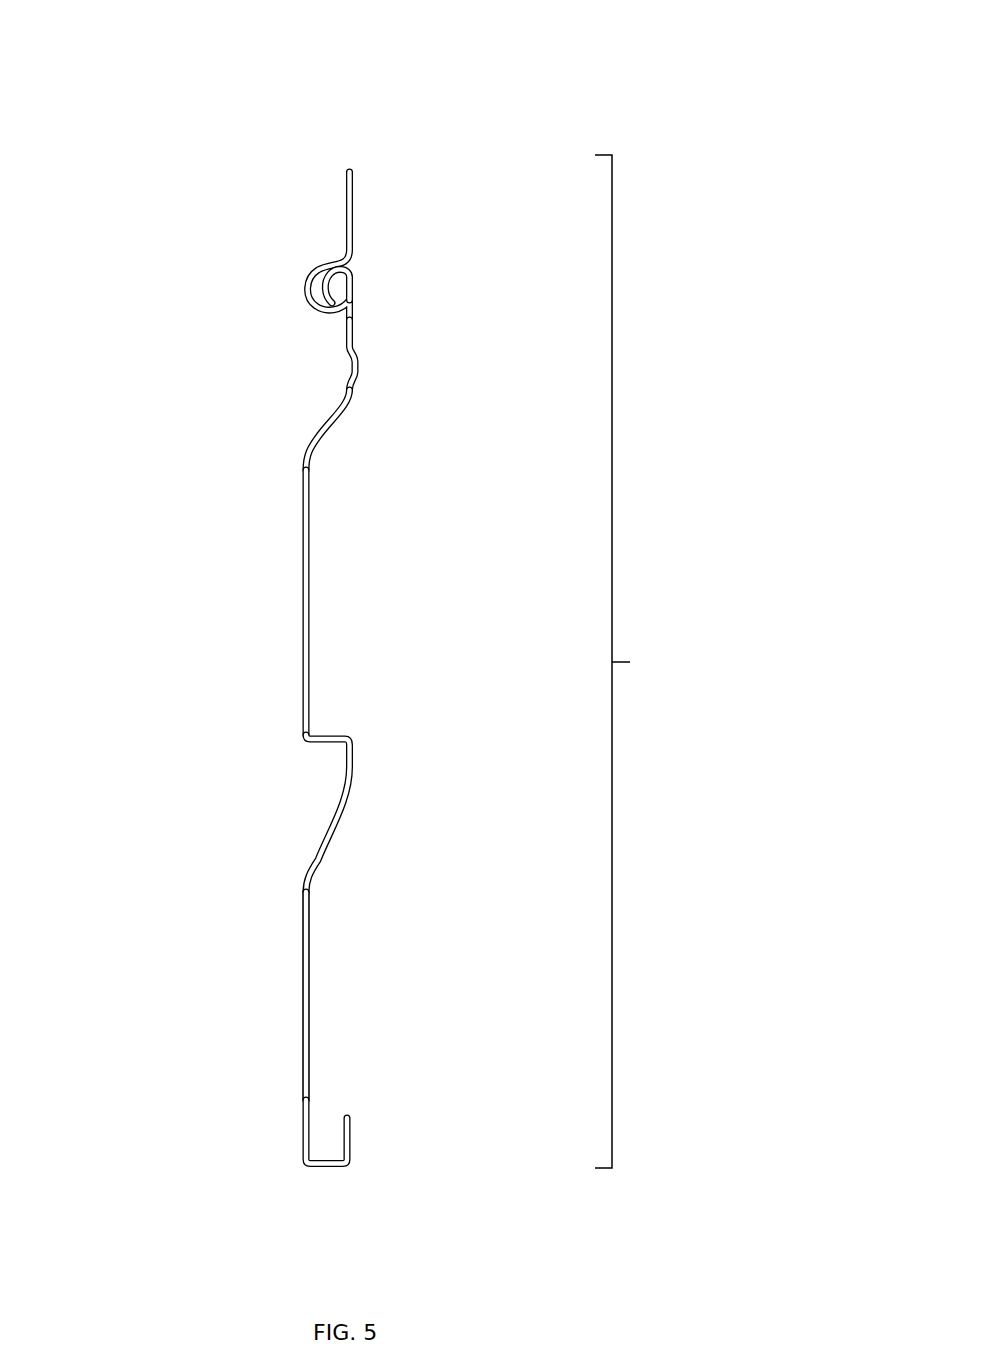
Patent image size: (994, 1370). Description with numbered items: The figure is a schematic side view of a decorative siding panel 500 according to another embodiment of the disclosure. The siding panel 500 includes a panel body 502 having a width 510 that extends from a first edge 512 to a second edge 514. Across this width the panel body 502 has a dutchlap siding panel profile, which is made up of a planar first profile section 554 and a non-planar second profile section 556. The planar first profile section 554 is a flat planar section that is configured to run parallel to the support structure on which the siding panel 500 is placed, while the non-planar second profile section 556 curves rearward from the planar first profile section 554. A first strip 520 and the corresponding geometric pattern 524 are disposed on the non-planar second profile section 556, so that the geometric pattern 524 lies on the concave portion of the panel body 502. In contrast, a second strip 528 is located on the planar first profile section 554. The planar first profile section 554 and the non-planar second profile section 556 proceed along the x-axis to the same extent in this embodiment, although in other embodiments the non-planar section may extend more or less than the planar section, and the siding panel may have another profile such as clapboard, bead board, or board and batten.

The siding panel 500 is at (342, 626).
The panel body 502 is at (237, 705).
The width 510 is at (653, 661).
The first edge 512 is at (343, 316).
The second edge 514 is at (335, 1168).
The first strip 520 is at (343, 378).
The geometric pattern 524 is at (345, 387).
The second strip 528 is at (266, 1027).
The planar first profile section 554 is at (302, 690).
The non-planar second profile section 556 is at (343, 798).